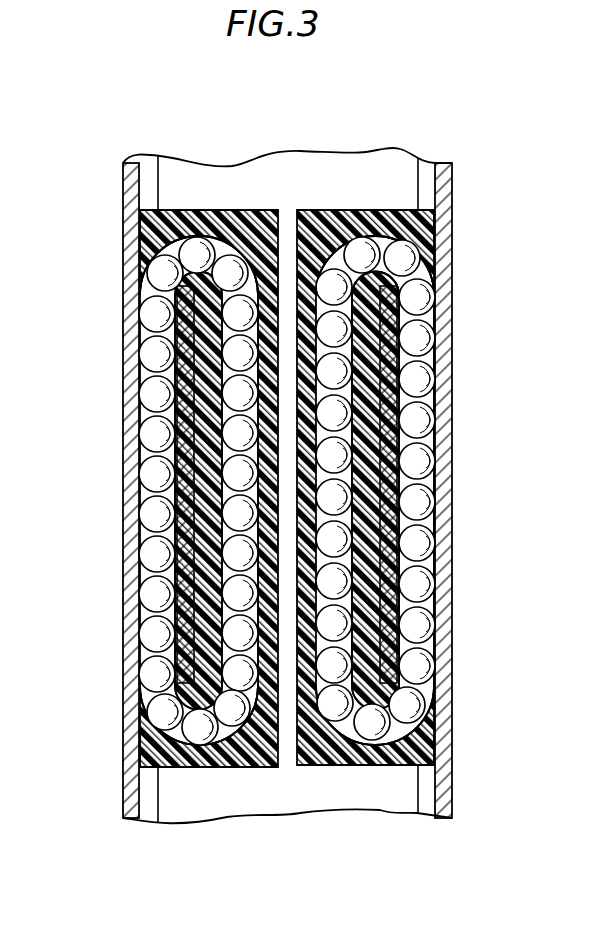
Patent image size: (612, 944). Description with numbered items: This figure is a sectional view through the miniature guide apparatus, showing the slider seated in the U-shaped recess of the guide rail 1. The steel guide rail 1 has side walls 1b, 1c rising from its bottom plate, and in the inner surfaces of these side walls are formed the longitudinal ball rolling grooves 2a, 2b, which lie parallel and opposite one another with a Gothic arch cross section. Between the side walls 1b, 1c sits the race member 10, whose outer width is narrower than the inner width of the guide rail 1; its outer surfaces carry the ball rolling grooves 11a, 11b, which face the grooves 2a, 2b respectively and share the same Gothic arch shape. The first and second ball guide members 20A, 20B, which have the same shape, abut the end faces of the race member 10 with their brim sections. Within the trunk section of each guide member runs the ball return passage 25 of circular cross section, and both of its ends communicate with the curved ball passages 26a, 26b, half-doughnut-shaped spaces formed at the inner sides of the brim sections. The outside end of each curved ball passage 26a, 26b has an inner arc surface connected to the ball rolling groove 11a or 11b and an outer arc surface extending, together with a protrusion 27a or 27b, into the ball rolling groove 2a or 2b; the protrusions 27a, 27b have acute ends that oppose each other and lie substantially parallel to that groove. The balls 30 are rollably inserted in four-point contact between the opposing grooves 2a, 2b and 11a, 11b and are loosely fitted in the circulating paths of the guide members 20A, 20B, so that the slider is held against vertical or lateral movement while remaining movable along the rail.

The guide rail 1 is at (288, 485).
The side wall 1b is at (131, 621).
The side wall 1c is at (442, 624).
The ball rolling groove 2a is at (139, 550).
The ball rolling groove 2b is at (432, 484).
The race member 10 is at (382, 315).
The ball rolling groove 11a is at (180, 313).
The ball rolling groove 11b is at (426, 421).
The first ball guide member 20A is at (292, 807).
The second ball guide member 20B is at (337, 189).
The ball return passage 25 is at (240, 350).
The curved ball passage 26a is at (380, 240).
The curved ball passage 26b is at (213, 247).
The protrusion 27a is at (424, 234).
The protrusion 27b is at (146, 240).
The balls 30 is at (150, 472).